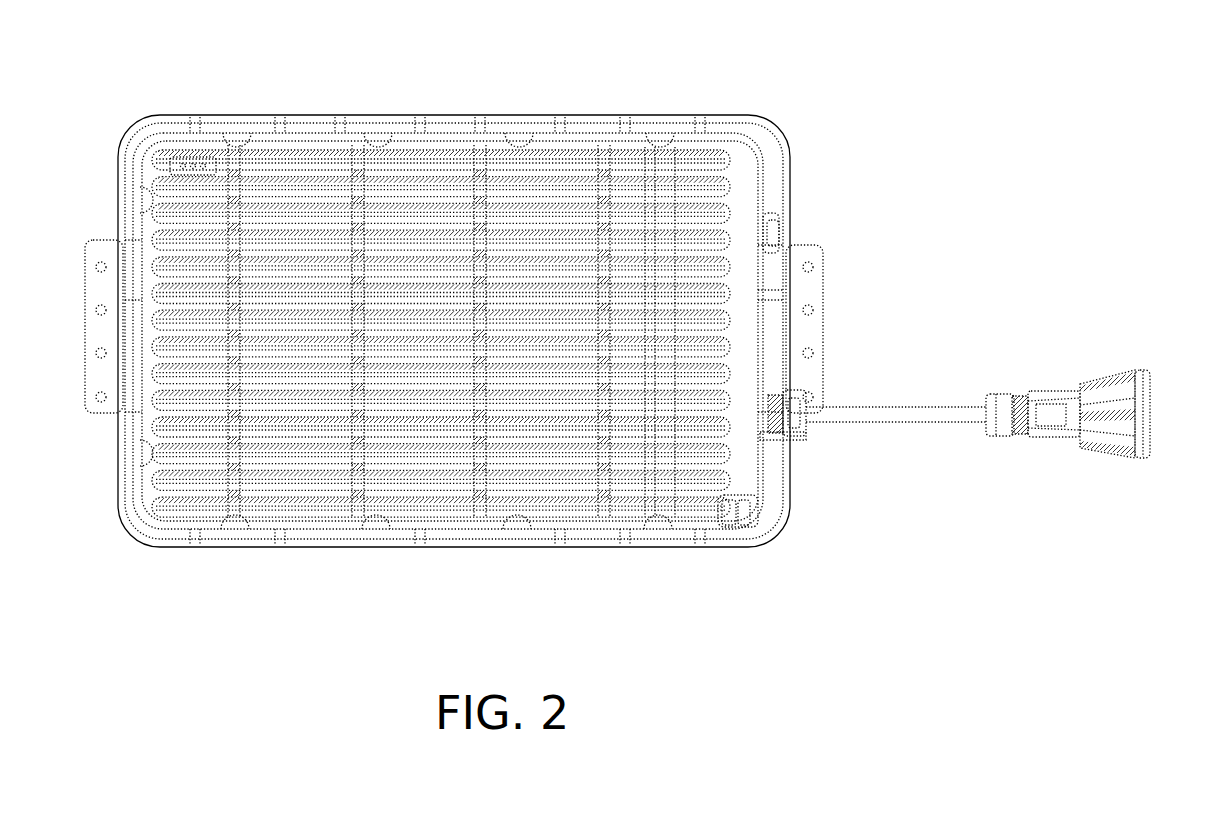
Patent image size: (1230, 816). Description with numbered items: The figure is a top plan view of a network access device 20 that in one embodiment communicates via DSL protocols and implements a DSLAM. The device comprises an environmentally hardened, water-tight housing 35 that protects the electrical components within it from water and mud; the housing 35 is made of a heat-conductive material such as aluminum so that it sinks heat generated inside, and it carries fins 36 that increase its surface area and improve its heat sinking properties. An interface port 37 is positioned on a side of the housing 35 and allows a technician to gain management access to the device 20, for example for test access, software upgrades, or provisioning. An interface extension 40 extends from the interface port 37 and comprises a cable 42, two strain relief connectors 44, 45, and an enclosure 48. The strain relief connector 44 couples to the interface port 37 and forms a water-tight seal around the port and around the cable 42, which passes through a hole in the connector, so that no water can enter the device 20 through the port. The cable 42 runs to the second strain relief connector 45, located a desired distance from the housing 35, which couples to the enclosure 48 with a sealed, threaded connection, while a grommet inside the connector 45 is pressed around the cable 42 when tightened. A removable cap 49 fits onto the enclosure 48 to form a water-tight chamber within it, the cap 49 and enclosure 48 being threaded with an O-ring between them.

The network access device 20 is at (455, 45).
The housing 35 is at (590, 117).
The fins 36 is at (710, 148).
The interface port 37 is at (772, 439).
The interface extension 40 is at (956, 348).
The cable 42 is at (862, 410).
The strain relief connector 44 is at (790, 413).
The strain relief connector 45 is at (1005, 418).
The enclosure 48 is at (1080, 440).
The removable cap 49 is at (1150, 410).